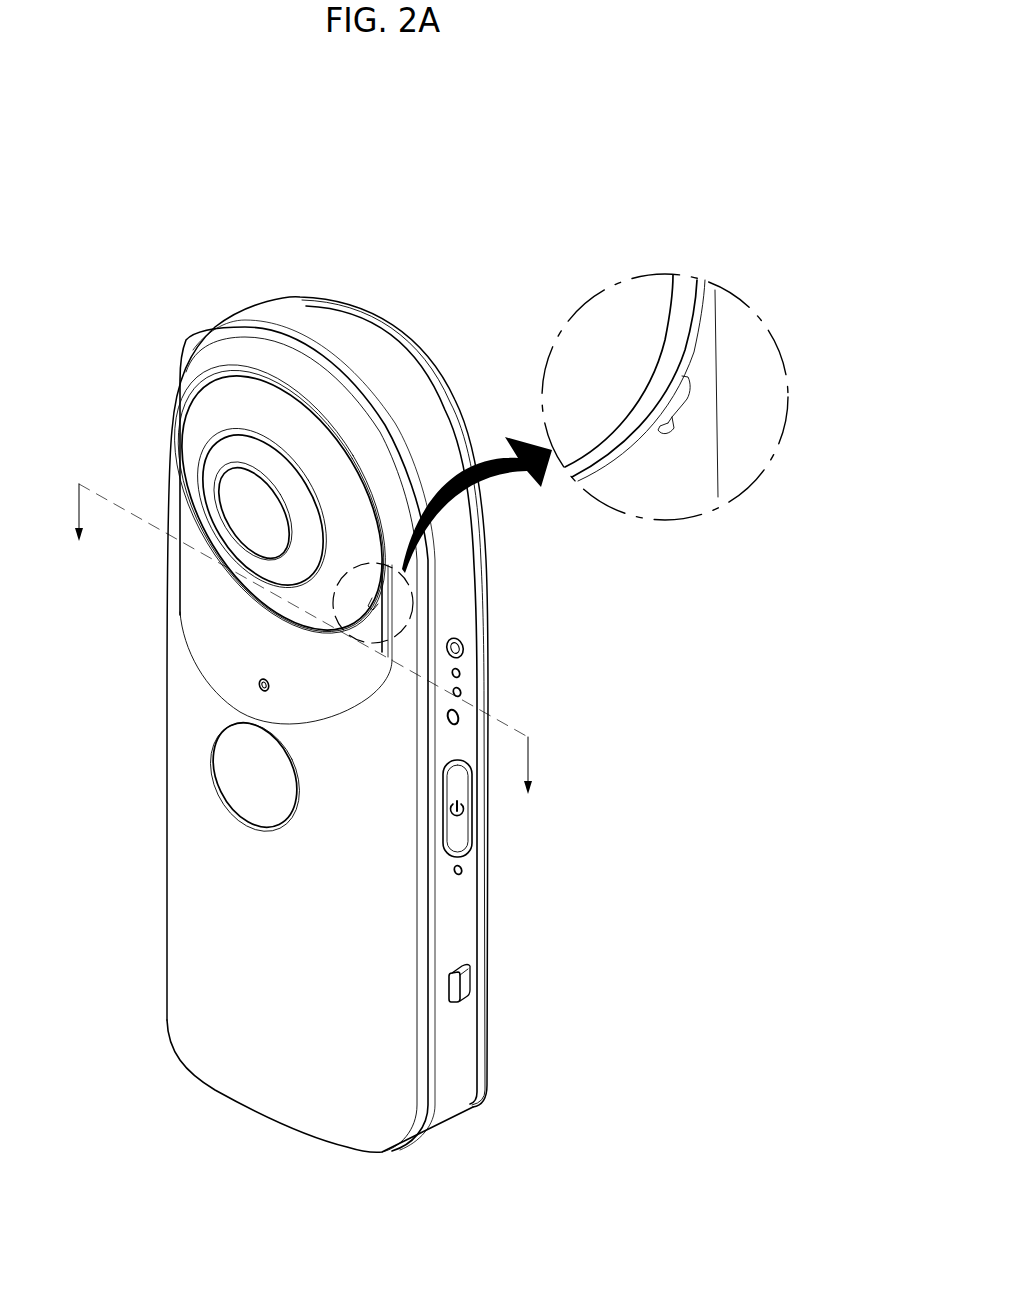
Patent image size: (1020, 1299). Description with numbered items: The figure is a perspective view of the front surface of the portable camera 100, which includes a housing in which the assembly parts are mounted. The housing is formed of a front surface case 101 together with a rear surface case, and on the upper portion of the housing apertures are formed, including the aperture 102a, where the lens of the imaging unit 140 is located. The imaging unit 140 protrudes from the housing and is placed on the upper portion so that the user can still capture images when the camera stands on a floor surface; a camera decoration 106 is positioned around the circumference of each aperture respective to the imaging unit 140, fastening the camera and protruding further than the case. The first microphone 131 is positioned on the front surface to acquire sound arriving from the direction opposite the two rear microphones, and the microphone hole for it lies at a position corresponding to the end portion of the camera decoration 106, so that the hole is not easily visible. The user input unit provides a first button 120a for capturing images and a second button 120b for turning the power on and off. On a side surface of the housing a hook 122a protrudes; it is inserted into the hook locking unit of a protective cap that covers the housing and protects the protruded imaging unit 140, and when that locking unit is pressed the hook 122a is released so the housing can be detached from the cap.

The portable camera 100 is at (84, 256).
The front surface case 101 is at (360, 334).
The camera decoration 106 is at (237, 412).
The imaging unit 140 is at (237, 505).
The first microphone 131 is at (372, 603).
The aperture 102a is at (673, 395).
The first button 120a is at (238, 771).
The second button 120b is at (460, 812).
The hook 122a is at (465, 982).